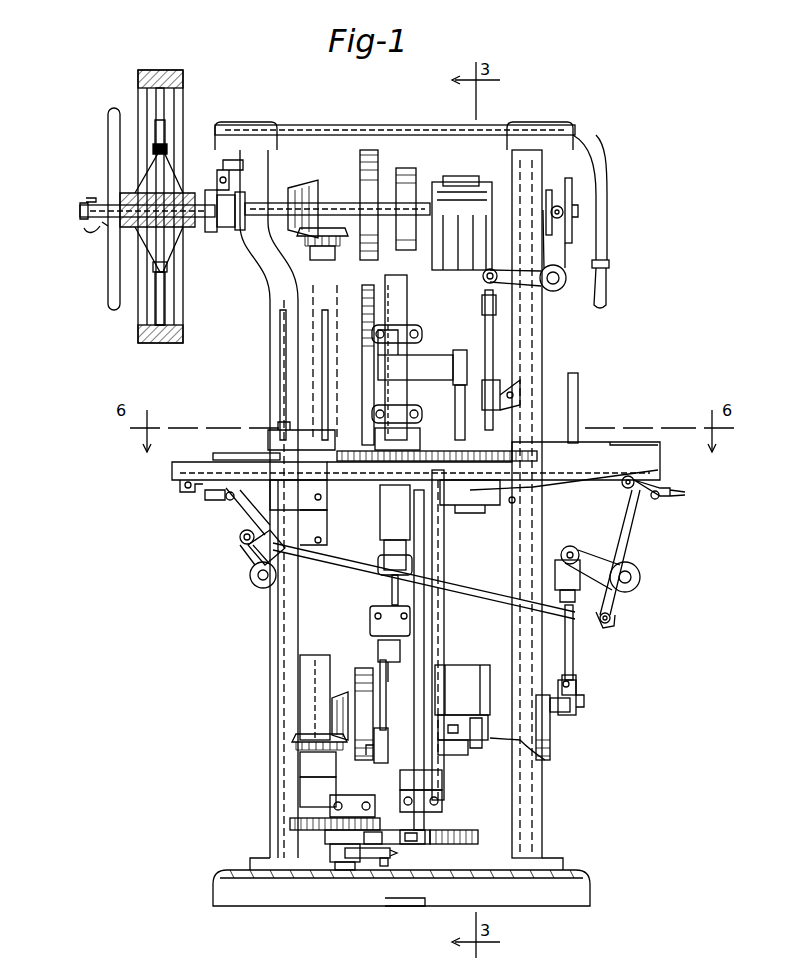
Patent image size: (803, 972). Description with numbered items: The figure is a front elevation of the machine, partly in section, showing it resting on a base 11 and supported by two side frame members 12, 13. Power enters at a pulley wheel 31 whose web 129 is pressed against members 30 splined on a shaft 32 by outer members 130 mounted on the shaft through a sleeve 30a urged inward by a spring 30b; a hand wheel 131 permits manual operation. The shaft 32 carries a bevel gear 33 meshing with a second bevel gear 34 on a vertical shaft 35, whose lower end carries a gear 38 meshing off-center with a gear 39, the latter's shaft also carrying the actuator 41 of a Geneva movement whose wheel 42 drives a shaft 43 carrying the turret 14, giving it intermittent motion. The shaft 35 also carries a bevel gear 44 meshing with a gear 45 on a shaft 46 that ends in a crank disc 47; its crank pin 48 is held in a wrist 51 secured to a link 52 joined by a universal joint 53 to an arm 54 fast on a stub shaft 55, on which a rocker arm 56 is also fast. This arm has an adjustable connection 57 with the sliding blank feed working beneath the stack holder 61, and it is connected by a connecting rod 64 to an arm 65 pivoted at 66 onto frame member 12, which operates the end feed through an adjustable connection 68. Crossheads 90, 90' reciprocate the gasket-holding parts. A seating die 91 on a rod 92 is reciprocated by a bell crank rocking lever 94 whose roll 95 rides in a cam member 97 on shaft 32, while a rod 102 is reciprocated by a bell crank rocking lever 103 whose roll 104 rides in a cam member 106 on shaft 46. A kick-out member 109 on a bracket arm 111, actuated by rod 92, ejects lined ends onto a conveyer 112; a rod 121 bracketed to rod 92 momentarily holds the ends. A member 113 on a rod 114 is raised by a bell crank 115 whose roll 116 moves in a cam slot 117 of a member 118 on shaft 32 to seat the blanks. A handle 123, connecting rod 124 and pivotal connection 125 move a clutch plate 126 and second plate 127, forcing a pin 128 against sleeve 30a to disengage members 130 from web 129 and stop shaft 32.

The base 11 is at (590, 893).
The side frame member 12 is at (268, 755).
The side frame member 13 is at (543, 805).
The turret 14 is at (435, 449).
The members splined on the shaft 30 is at (135, 185).
The sleeve 30a is at (102, 230).
The spring 30b is at (82, 228).
The pulley wheel 31 is at (183, 77).
The shaft 32 is at (80, 208).
The bevel gear 33 is at (306, 178).
The second bevel gear 34 is at (323, 228).
The vertical shaft 35 is at (310, 672).
The gear 38 is at (296, 830).
The gear 39 is at (385, 830).
The actuator of a Geneva movement 41 is at (367, 858).
The wheel of the Geneva movement 42 is at (445, 844).
The shaft 43 is at (424, 645).
The bevel gear 44 is at (296, 738).
The bevel gear 45 is at (332, 712).
The shaft 46 is at (355, 690).
The crank disc 47 is at (550, 740).
The crank pin 48 is at (584, 700).
The wrist 51 is at (568, 712).
The link 52 is at (573, 640).
The universal joint 53 is at (565, 548).
The arm 54 is at (592, 552).
The stub shaft 55 is at (640, 577).
The rocker arm 56 is at (640, 538).
The adjustable connection 57 is at (650, 480).
The holder 61 is at (578, 395).
The connecting rod 64 is at (424, 635).
The arm 65 is at (240, 522).
The pivot 66 is at (255, 578).
The adjustable connection 68 is at (205, 500).
The crosshead 90 is at (462, 210).
The crosshead 90' is at (462, 728).
The seating die 91 is at (375, 438).
The rod 92 is at (385, 398).
The bell crank rocking lever 94 is at (355, 248).
The roll 95 is at (406, 200).
The cam member 97 is at (378, 160).
The rod 102 is at (380, 540).
The bell crank rocking lever 103 is at (390, 665).
The roll 104 is at (388, 745).
The cam member 106 is at (386, 700).
The kick-out member 109 is at (455, 400).
The bracket arm 111 is at (428, 350).
The belt conveyer 112 is at (540, 495).
The member 113 is at (500, 420).
The rod 114 is at (486, 320).
The bell crank 115 is at (560, 255).
The roll 116 is at (572, 212).
The cam slot 117 is at (560, 205).
The cam member 118 is at (572, 195).
The rod 121 is at (362, 380).
The handle 123 is at (608, 240).
The connecting rod 124 is at (388, 133).
The pivotal connection 125 is at (232, 178).
The clutch plate 126 is at (240, 230).
The second plate 127 is at (212, 240).
The pin 128 is at (205, 212).
The web of the pulley wheel 129 is at (165, 112).
The outer members 130 is at (154, 95).
The hand wheel 131 is at (108, 140).